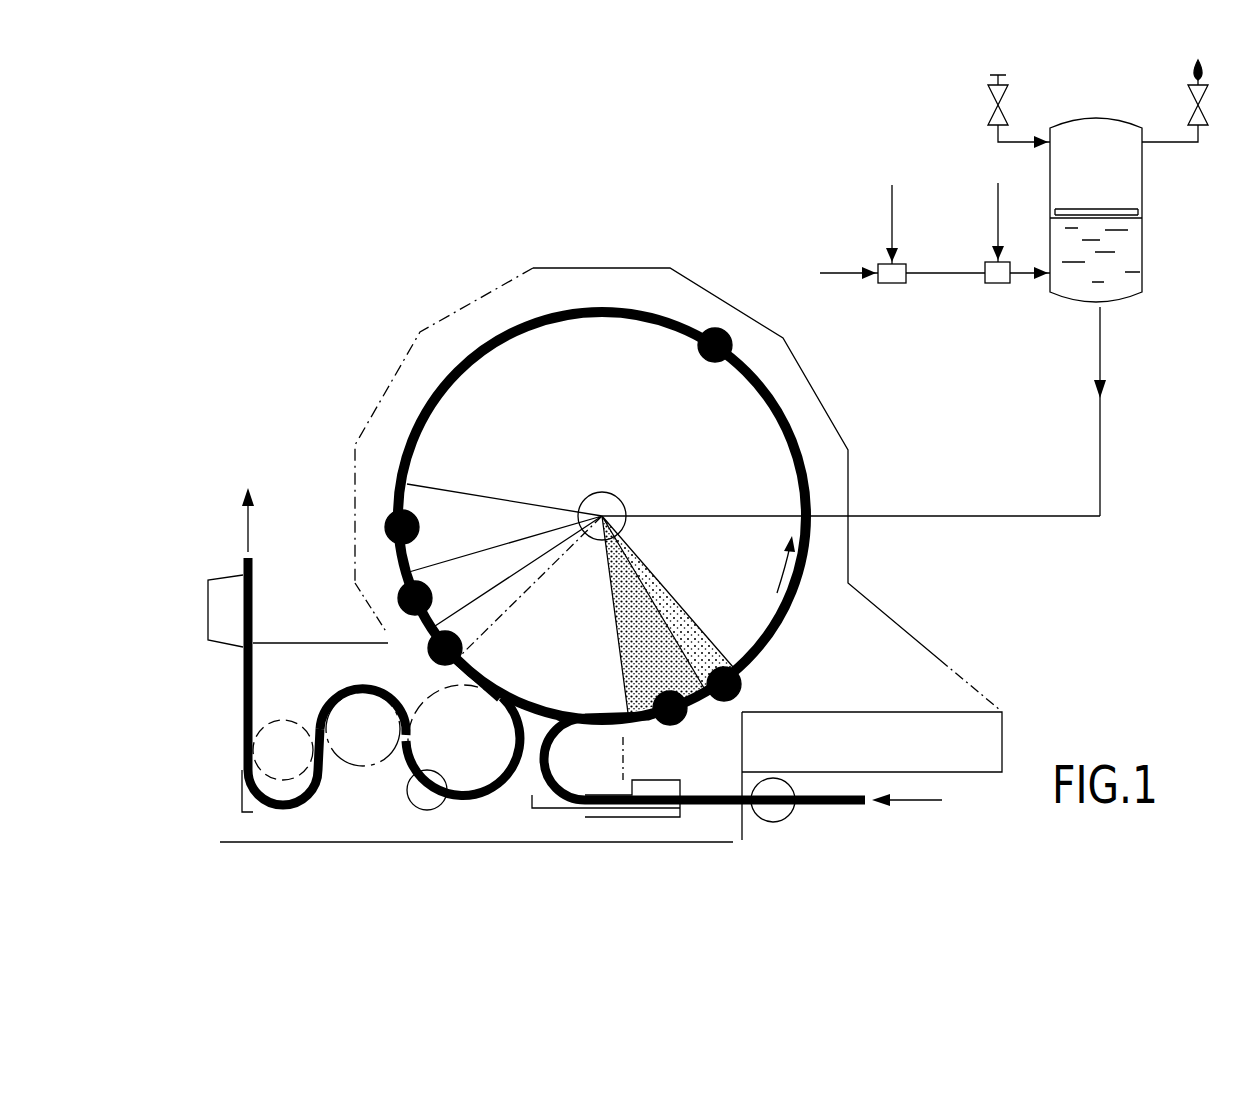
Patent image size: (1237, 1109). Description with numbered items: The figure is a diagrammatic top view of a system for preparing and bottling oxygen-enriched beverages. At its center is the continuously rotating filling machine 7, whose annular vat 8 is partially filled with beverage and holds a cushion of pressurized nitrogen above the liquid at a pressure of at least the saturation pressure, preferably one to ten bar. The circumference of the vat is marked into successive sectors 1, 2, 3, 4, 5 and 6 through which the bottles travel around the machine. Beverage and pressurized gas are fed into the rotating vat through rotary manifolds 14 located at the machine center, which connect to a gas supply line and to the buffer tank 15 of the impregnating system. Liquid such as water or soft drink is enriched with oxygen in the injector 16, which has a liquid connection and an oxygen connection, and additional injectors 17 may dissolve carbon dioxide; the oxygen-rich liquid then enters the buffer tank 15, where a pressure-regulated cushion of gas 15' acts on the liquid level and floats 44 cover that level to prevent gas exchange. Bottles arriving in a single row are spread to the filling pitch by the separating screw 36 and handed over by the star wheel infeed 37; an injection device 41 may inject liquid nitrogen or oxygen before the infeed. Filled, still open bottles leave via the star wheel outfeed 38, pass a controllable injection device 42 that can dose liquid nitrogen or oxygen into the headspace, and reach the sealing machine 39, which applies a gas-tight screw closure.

The filling machine 7 is at (296, 344).
The annular vat 8 is at (460, 360).
The rotary manifolds 14 is at (598, 497).
The first zone 1 is at (670, 708).
The second zone 2 is at (724, 684).
The third zone 3 is at (715, 345).
The fourth zone 4 is at (402, 527).
The fifth zone 5 is at (415, 598).
The sixth zone 6 is at (445, 648).
The buffer tank 15 is at (1139, 317).
The cushion of gas 15' is at (1098, 100).
The floats 44 is at (1118, 209).
The injector 16 is at (892, 283).
The additional injectors 17 is at (999, 283).
The separating screw 36 is at (630, 806).
The star wheel infeed 37 is at (582, 767).
The star wheel outfeed 38 is at (493, 762).
The sealing machine 39 is at (360, 732).
The injection device 41 is at (773, 812).
The controllable injection device 42 is at (421, 793).